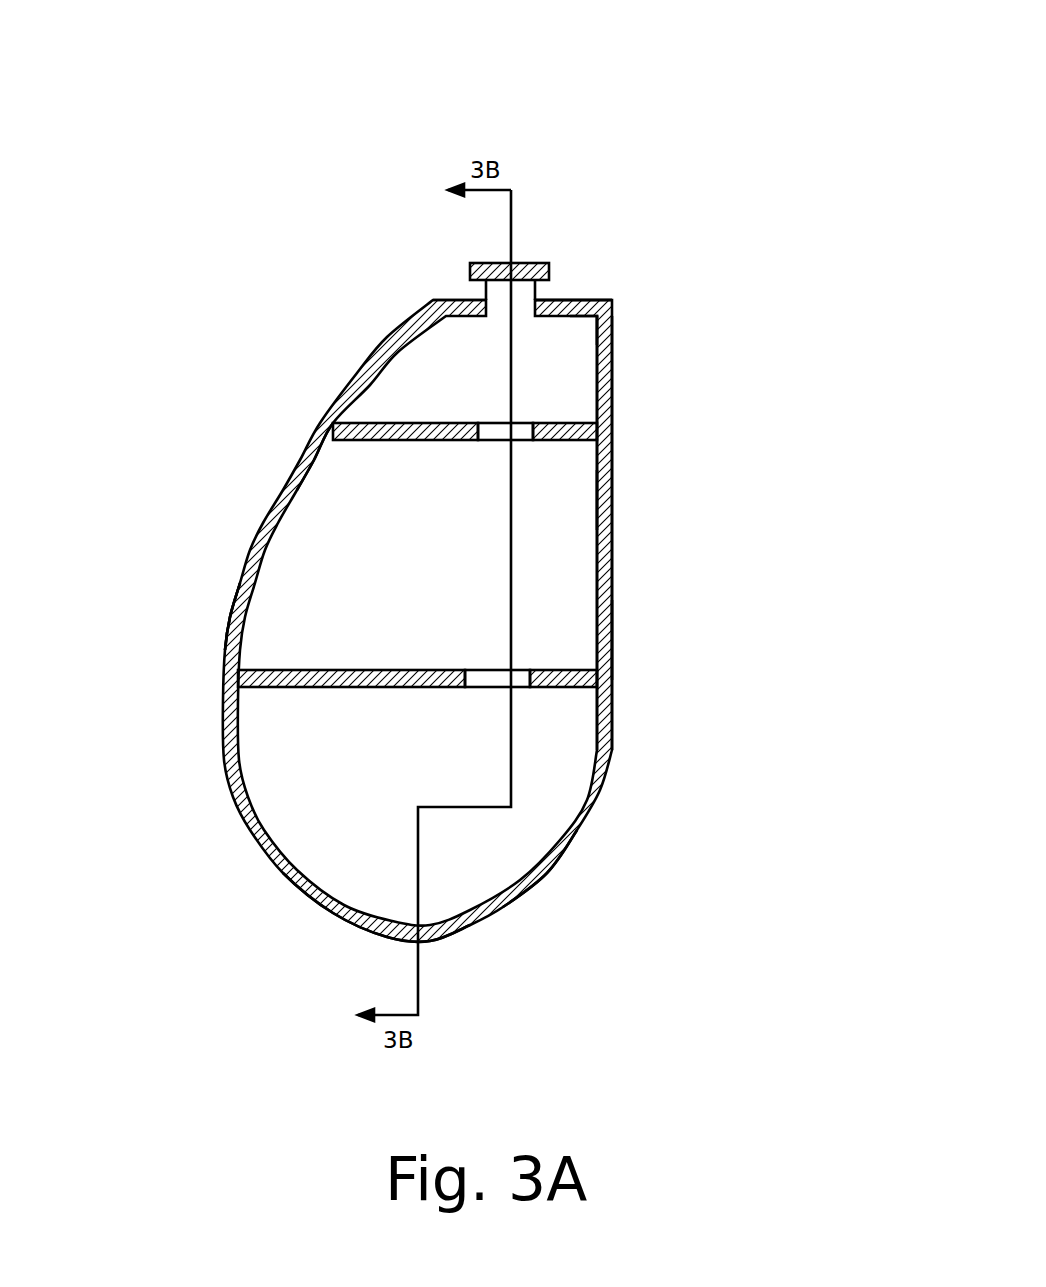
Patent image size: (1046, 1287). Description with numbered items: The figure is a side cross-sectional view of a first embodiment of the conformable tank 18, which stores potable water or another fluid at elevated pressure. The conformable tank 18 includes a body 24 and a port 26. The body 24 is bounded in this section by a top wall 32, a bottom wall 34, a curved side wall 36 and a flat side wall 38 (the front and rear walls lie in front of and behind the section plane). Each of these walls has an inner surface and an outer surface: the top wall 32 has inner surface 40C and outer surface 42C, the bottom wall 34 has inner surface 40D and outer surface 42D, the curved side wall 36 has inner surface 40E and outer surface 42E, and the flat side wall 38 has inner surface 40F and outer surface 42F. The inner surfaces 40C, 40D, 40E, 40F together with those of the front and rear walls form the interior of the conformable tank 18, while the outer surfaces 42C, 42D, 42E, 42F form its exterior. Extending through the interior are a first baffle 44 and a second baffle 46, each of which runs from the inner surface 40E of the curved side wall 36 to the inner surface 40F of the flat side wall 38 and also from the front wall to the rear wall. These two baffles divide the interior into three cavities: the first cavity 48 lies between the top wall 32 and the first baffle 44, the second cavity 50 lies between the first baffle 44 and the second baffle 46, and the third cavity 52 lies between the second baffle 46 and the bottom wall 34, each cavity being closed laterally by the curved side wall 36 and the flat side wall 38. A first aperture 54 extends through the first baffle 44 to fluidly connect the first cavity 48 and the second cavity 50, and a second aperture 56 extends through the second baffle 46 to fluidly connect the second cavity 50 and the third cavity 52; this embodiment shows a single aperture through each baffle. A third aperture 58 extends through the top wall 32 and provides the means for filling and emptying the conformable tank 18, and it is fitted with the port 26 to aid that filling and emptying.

The conformable tank 18 is at (795, 133).
The body 24 is at (361, 322).
The port 26 is at (530, 263).
The top wall 32 is at (450, 300).
The bottom wall 34 is at (455, 937).
The curved side wall 36 is at (272, 488).
The flat side wall 38 is at (605, 583).
The inner surface 40C is at (572, 318).
The inner surface 40D is at (365, 905).
The inner surface 40E is at (280, 520).
The inner surface 40F is at (592, 491).
The outer surface 42C is at (558, 297).
The outer surface 42D is at (530, 905).
The outer surface 42E is at (230, 617).
The outer surface 42F is at (612, 638).
The first baffle 44 is at (390, 430).
The second baffle 46 is at (360, 687).
The first cavity 48 is at (443, 348).
The second cavity 50 is at (352, 565).
The third cavity 52 is at (315, 787).
The first aperture 54 is at (517, 432).
The second aperture 56 is at (518, 680).
The third aperture 58 is at (497, 313).